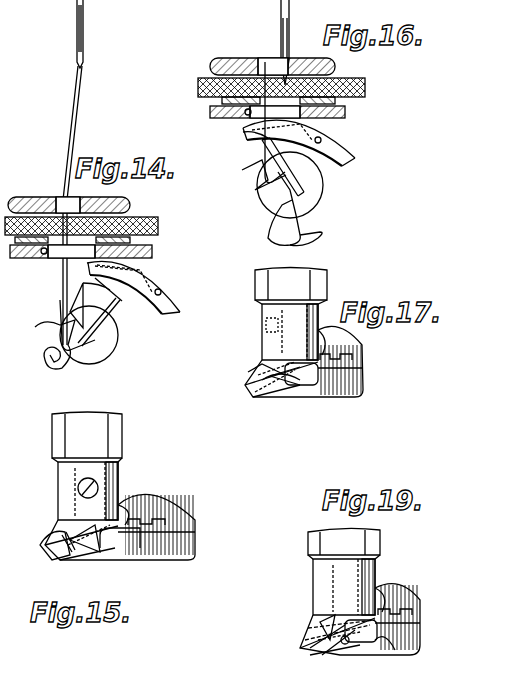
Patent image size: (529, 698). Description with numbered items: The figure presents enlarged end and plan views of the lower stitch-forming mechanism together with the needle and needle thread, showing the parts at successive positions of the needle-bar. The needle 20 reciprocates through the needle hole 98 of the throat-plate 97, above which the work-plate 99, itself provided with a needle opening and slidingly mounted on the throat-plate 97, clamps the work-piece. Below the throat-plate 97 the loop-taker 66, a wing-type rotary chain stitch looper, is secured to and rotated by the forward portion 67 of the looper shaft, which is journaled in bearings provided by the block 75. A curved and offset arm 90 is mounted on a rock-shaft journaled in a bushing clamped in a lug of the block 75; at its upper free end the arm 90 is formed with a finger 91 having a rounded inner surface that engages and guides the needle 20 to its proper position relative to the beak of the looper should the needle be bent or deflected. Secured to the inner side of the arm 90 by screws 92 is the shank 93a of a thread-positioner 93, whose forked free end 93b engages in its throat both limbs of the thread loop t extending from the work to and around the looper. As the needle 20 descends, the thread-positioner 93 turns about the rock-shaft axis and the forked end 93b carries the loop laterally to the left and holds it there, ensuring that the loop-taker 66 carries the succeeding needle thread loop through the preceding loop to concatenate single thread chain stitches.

In FIG. 14, the needle 20 is at (84, 62).
In FIG. 16, the needle 20 is at (290, 48).
In FIG. 19, the needle 20 is at (322, 625).
In FIG. 14, the loop-taker 66 is at (45, 348).
In FIG. 16, the loop-taker 66 is at (272, 230).
In FIG. 17, the loop-taker 66 is at (255, 366).
In FIG. 15, the loop-taker 66 is at (48, 540).
In FIG. 19, the loop-taker 66 is at (388, 652).
In FIG. 17, the forward portion of the looper shaft 67 is at (318, 272).
In FIG. 15, the forward portion of the looper shaft 67 is at (122, 422).
In FIG. 19, the forward portion of the looper shaft 67 is at (375, 538).
In FIG. 17, the block 75 is at (328, 286).
In FIG. 15, the block 75 is at (122, 440).
In FIG. 19, the block 75 is at (380, 547).
In FIG. 14, the curved and offset arm 90 is at (172, 297).
In FIG. 16, the curved and offset arm 90 is at (348, 150).
In FIG. 17, the curved and offset arm 90 is at (350, 398).
In FIG. 15, the curved and offset arm 90 is at (160, 497).
In FIG. 19, the curved and offset arm 90 is at (400, 592).
In FIG. 14, the finger 91 is at (118, 299).
In FIG. 16, the finger 91 is at (262, 145).
In FIG. 17, the finger 91 is at (255, 395).
In FIG. 15, the finger 91 is at (118, 555).
In FIG. 19, the finger 91 is at (318, 654).
In FIG. 14, the screws 92 is at (160, 296).
In FIG. 16, the screws 92 is at (338, 158).
In FIG. 17, the screws 92 is at (335, 356).
In FIG. 15, the screws 92 is at (150, 522).
In FIG. 19, the screws 92 is at (395, 612).
In FIG. 14, the thread-positioner 93 is at (142, 272).
In FIG. 16, the thread-positioner 93 is at (300, 125).
In FIG. 17, the thread-positioner 93 is at (300, 385).
In FIG. 15, the thread-positioner 93 is at (142, 545).
In FIG. 19, the thread-positioner 93 is at (362, 642).
In FIG. 17, the shank 93a is at (363, 368).
In FIG. 15, the shank 93a is at (195, 530).
In FIG. 19, the shank 93a is at (420, 623).
In FIG. 14, the forked free end 93b is at (82, 284).
In FIG. 16, the forked free end 93b is at (244, 135).
In FIG. 17, the forked free end 93b is at (262, 378).
In FIG. 15, the forked free end 93b is at (96, 552).
In FIG. 19, the forked free end 93b is at (312, 646).
In FIG. 14, the throat-plate 97 is at (152, 254).
In FIG. 16, the throat-plate 97 is at (212, 113).
In FIG. 14, the needle hole 98 is at (44, 256).
In FIG. 16, the needle hole 98 is at (246, 117).
In FIG. 14, the work-plate 99 is at (131, 241).
In FIG. 16, the work-plate 99 is at (222, 100).
In FIG. 14, the thread t is at (62, 295).
In FIG. 16, the thread t is at (262, 178).
In FIG. 17, the thread t is at (290, 392).
In FIG. 15, the thread t is at (68, 553).
In FIG. 19, the thread t is at (350, 650).